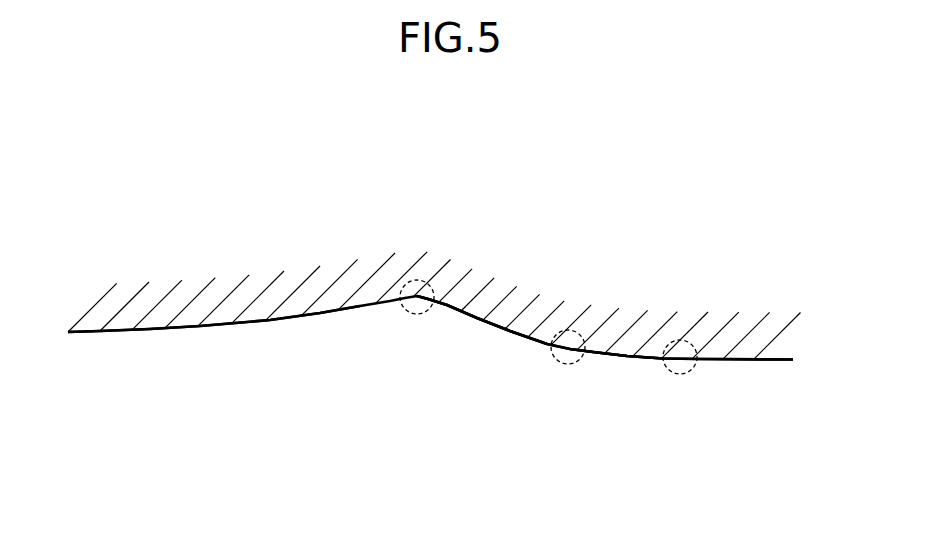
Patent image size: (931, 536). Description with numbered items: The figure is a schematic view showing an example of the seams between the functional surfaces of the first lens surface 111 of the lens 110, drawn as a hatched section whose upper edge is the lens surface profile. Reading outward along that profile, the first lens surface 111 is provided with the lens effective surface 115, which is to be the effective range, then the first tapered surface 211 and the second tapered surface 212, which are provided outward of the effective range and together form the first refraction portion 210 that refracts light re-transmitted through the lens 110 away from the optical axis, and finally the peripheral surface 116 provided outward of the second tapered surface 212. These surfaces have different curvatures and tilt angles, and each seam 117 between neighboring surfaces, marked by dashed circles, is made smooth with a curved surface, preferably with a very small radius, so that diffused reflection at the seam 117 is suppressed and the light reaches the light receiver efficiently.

The lens 110 is at (478, 282).
The first lens surface 111 is at (268, 330).
The lens effective surface 115 is at (153, 330).
The peripheral surface 116 is at (762, 362).
The seam 117 is at (415, 315).
The first refraction portion 210 is at (540, 327).
The first tapered surface 211 is at (478, 317).
The second tapered surface 212 is at (627, 355).